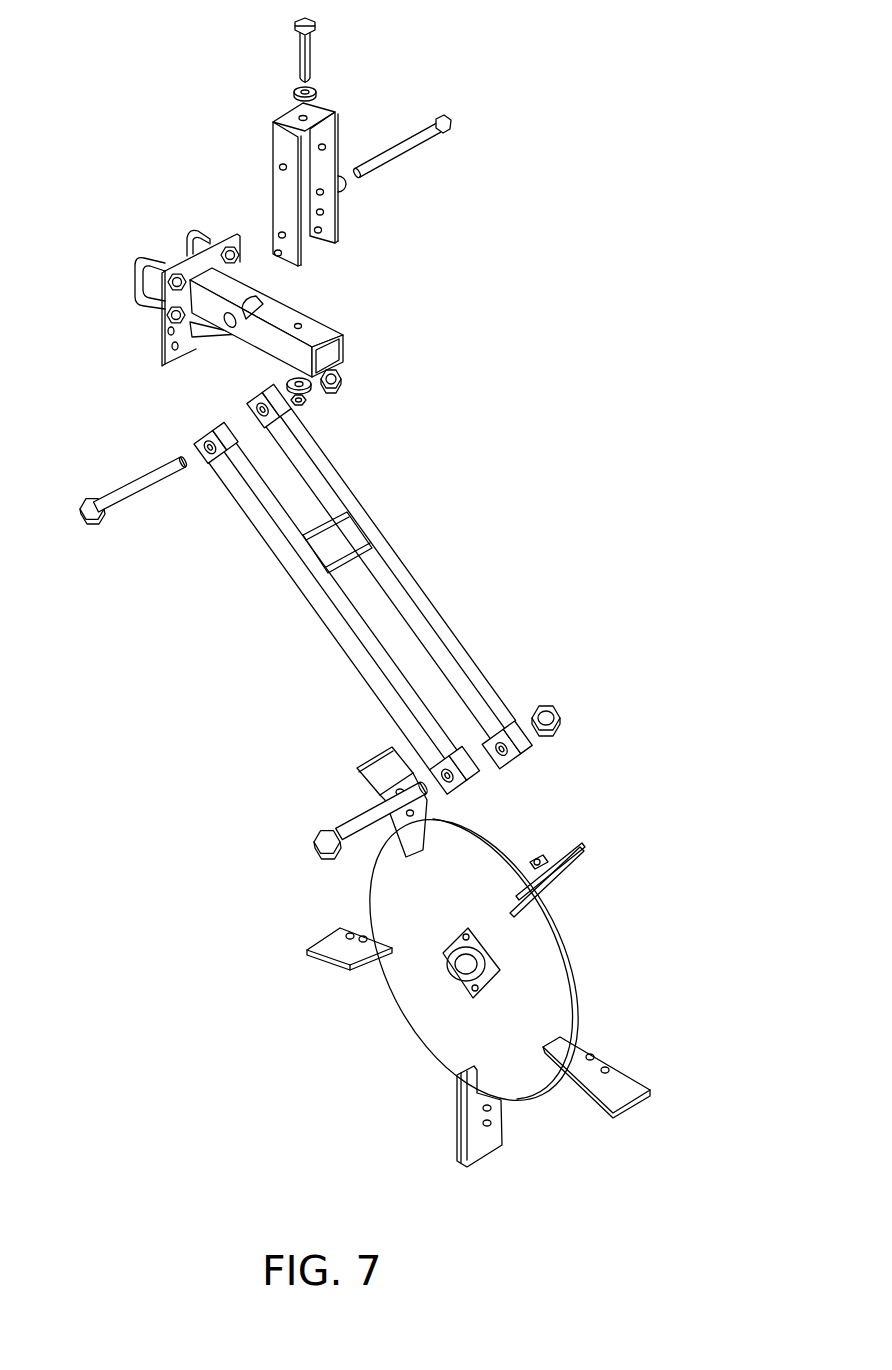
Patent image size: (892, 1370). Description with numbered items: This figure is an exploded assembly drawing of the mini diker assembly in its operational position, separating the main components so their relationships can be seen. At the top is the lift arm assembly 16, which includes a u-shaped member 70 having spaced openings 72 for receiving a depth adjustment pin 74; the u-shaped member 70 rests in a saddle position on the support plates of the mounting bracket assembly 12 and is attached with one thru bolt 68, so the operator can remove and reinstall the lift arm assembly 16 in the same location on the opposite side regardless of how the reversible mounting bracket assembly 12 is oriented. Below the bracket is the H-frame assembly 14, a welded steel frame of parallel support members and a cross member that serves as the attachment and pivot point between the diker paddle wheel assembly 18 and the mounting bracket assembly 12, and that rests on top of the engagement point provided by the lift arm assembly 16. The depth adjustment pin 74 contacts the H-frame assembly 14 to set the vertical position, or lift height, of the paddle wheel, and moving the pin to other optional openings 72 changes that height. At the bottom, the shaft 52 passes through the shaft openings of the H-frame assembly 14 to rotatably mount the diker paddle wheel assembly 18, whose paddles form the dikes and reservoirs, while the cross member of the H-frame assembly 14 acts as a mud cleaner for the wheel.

The mounting bracket assembly 12 is at (340, 309).
The H-frame assembly 14 is at (466, 626).
The lift arm assembly 16 is at (319, 176).
The diker paddle wheel assembly 18 is at (585, 934).
The shaft 52 is at (350, 813).
The thru bolt 68 is at (312, 47).
The u-shaped member 70 is at (338, 147).
The spaced openings 72 is at (273, 163).
The depth adjustment pin 74 is at (413, 143).